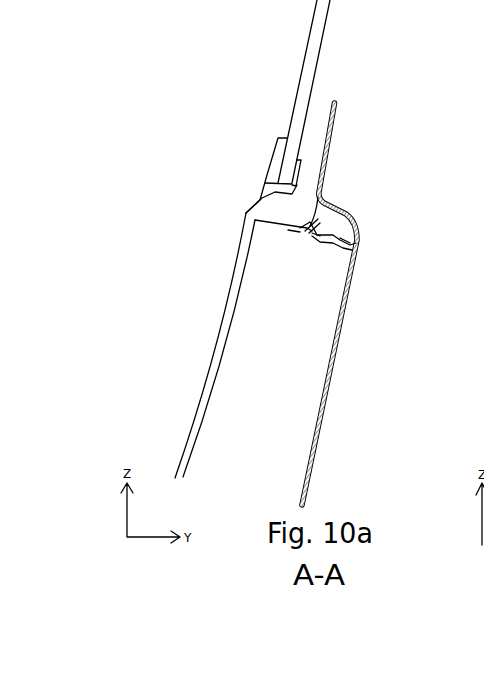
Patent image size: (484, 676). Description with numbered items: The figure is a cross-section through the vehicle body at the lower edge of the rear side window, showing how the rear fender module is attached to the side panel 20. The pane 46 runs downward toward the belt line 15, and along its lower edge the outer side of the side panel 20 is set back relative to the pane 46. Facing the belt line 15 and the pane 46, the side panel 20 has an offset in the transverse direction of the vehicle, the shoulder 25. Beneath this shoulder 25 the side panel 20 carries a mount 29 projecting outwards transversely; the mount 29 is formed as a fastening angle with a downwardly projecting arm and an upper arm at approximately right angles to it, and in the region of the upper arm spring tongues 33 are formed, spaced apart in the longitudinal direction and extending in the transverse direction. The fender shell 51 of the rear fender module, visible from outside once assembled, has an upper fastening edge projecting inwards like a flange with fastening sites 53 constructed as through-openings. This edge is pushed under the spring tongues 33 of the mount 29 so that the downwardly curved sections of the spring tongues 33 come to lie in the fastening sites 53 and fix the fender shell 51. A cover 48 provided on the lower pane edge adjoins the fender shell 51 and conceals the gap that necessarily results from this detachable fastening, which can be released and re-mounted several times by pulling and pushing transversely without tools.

The belt line 15 is at (196, 142).
The side panel 20 is at (334, 367).
The shoulder 25 is at (350, 218).
The mount 29 is at (356, 245).
The spring tongues 33 is at (318, 203).
The pane 46 is at (303, 67).
The cover 48 is at (273, 183).
The fender shell 51 is at (232, 305).
The fastening sites 53 is at (315, 233).